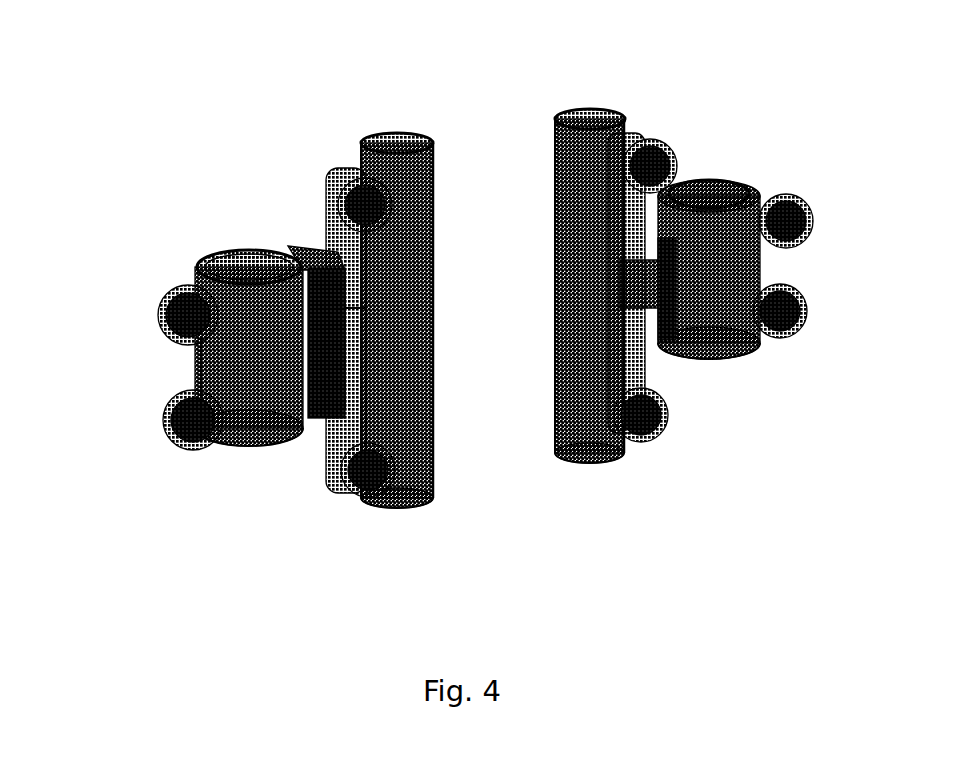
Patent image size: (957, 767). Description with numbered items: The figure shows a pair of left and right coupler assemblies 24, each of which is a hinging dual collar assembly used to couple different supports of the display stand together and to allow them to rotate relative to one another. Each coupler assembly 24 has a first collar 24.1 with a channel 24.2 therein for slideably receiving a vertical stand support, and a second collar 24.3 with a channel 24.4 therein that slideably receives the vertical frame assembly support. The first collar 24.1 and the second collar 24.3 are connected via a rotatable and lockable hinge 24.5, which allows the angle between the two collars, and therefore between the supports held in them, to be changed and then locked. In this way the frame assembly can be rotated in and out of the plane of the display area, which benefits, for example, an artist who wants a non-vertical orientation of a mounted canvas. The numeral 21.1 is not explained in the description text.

The coupler assembly 24 is at (340, 253).
The first collar 24.1 is at (753, 195).
The channel 24.2 is at (238, 250).
The second collar 24.3 is at (578, 440).
The channel 24.4 is at (580, 113).
The rotatable and lockable hinge 24.5 is at (350, 332).
The pipe 21.1 is at (187, 259).